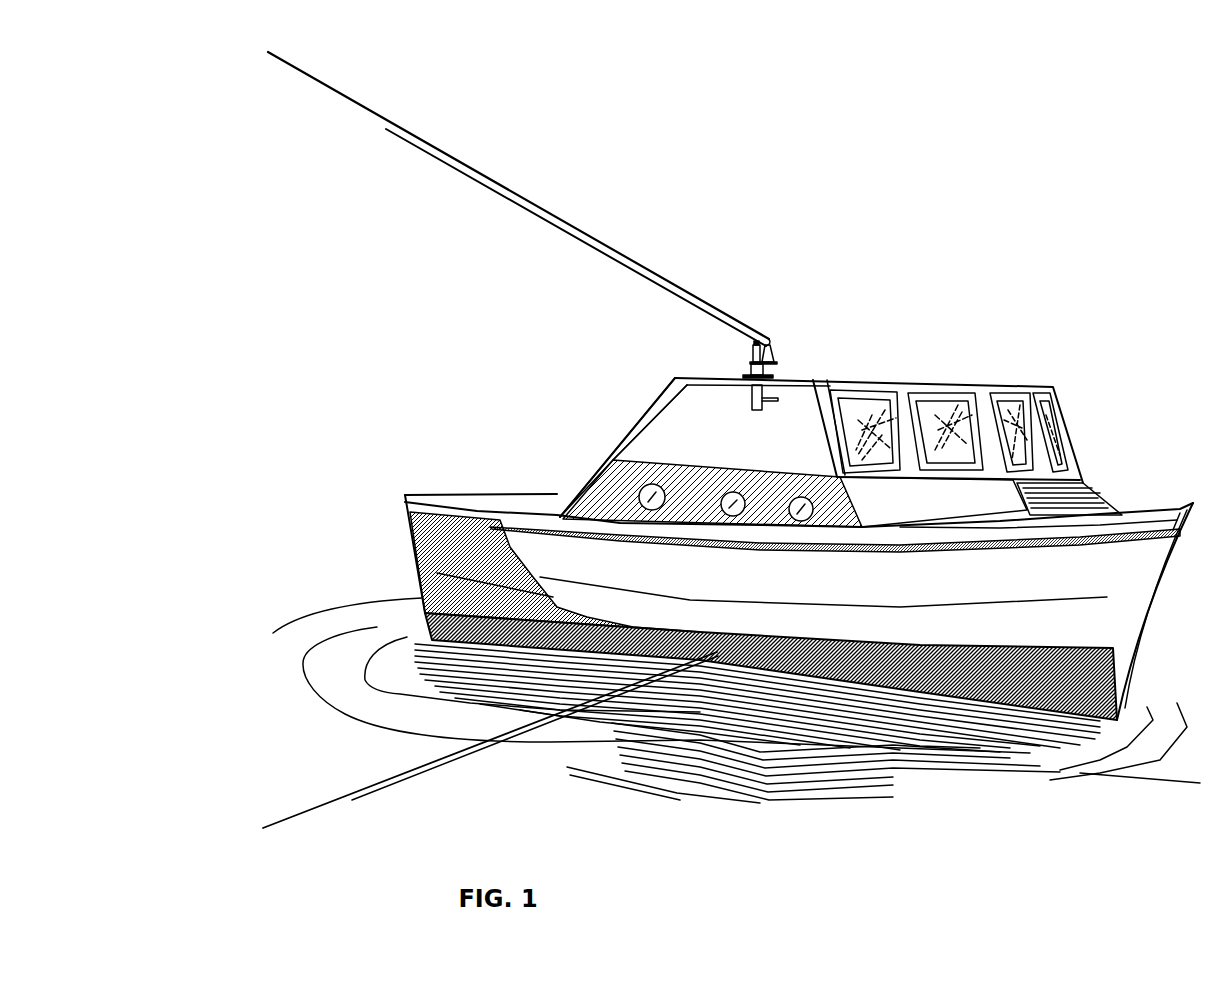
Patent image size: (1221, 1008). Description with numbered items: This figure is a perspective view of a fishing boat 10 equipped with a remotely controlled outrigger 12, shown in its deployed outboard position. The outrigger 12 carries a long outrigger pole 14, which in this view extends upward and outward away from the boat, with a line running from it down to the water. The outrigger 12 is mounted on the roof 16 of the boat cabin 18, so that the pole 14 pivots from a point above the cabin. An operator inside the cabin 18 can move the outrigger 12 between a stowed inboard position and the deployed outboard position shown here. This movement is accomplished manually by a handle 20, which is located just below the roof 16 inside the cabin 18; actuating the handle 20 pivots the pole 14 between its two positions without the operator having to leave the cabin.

The fishing boat 10 is at (737, 497).
The remotely controlled outrigger 12 is at (818, 368).
The outrigger pole 14 is at (670, 278).
The roof 16 is at (794, 418).
The boat cabin 18 is at (655, 430).
The handle 20 is at (767, 405).